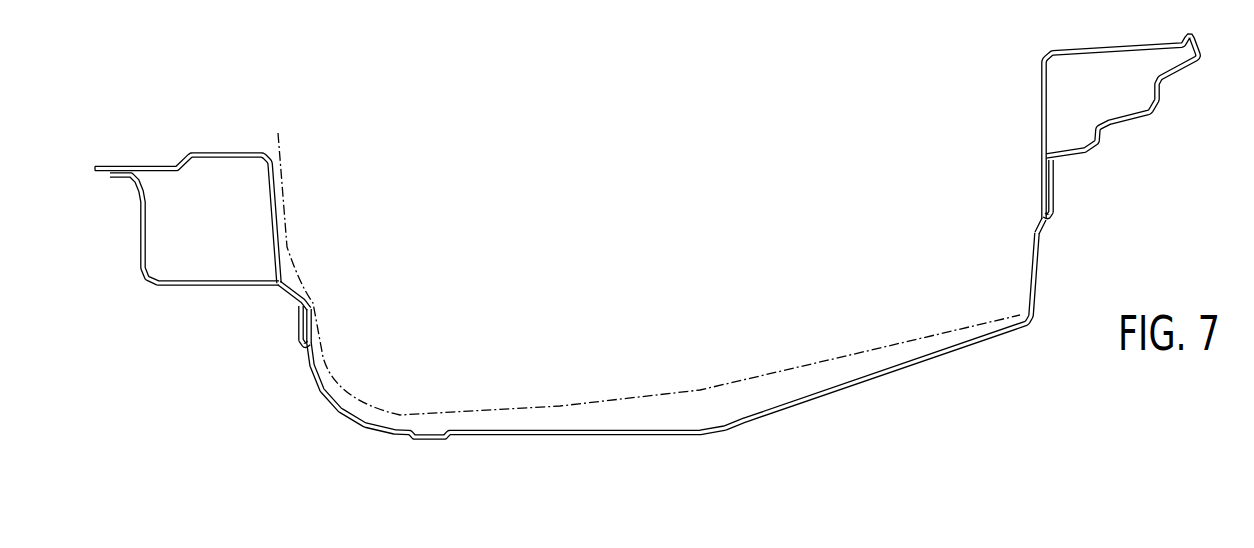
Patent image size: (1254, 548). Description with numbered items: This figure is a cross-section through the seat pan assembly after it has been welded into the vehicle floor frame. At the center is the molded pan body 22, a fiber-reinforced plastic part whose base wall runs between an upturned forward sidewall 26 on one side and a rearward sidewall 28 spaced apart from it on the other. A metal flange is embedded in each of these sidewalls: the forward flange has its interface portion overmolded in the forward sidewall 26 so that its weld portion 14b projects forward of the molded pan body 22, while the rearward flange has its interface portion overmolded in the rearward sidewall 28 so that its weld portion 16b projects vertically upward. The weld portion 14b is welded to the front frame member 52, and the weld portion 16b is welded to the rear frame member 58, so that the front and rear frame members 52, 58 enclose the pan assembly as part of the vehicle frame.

The molded pan body 22 is at (402, 449).
The first metal flange weld portion 14b is at (290, 297).
The forward sidewall 26 is at (308, 345).
The rearward sidewall 28 is at (1040, 229).
The second metal flange weld portion 16b is at (1042, 188).
The front frame member 52 is at (253, 198).
The rear frame member 58 is at (1130, 97).